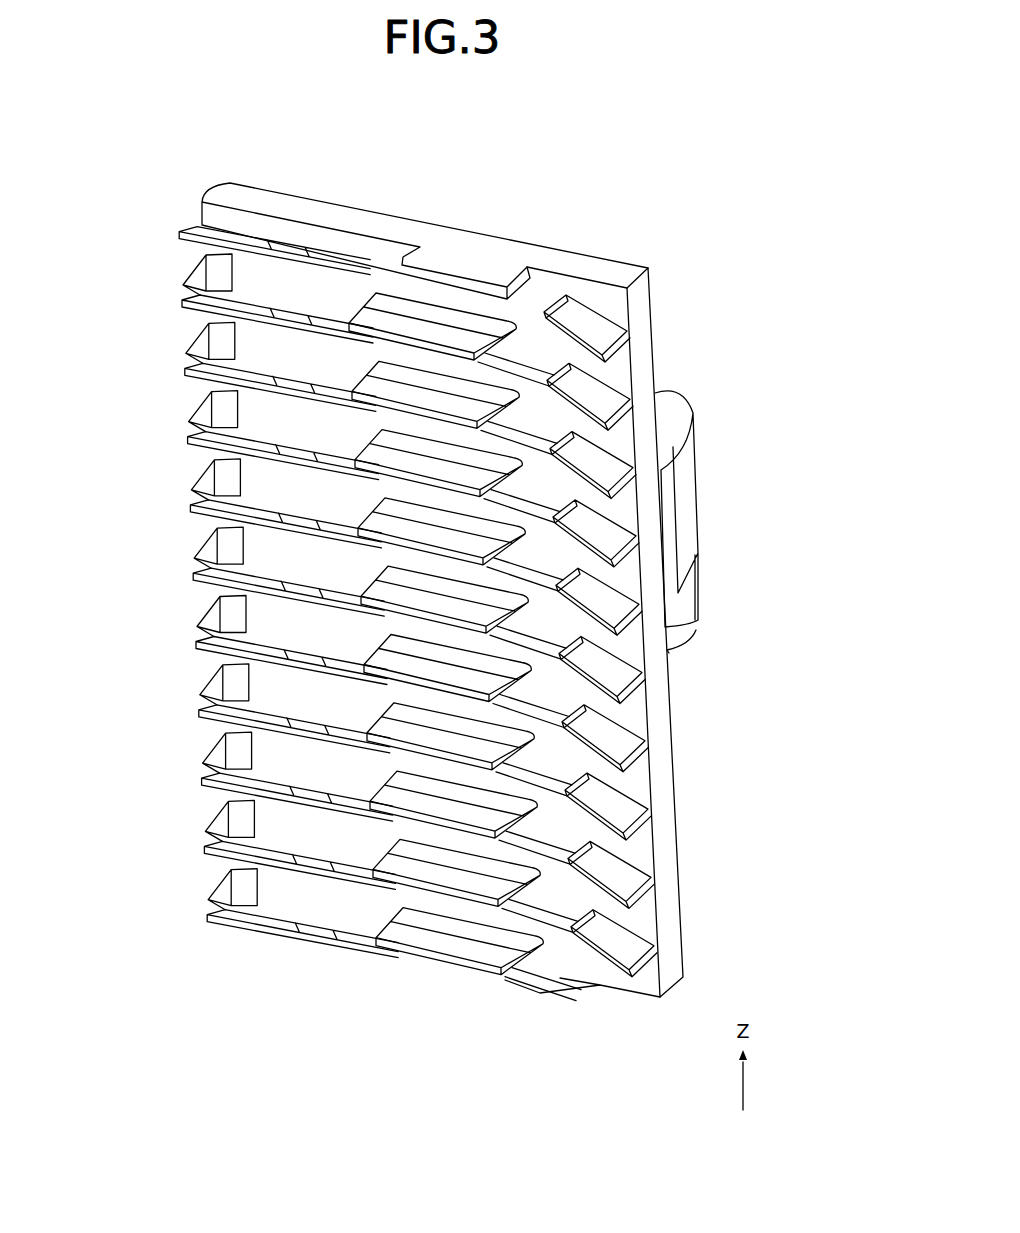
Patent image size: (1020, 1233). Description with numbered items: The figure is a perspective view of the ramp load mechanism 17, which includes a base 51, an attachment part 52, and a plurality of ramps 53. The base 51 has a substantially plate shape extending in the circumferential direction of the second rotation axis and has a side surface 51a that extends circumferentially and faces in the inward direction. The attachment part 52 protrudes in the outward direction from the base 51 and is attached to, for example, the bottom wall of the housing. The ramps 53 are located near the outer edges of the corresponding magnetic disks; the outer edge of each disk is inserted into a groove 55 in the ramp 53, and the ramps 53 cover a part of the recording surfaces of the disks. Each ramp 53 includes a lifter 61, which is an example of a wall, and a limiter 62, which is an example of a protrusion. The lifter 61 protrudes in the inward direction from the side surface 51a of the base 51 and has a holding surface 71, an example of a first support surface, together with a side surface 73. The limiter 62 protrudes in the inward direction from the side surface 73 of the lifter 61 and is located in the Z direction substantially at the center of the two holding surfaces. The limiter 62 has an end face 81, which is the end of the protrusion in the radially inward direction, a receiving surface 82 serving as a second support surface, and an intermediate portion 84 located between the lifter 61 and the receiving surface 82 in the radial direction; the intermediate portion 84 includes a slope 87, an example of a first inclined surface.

The ramp load mechanism 17 is at (436, 583).
The base 51 is at (650, 290).
The side surface 51a is at (613, 300).
The attachment part 52 is at (695, 480).
The ramp 53 is at (617, 383).
The groove 55 is at (186, 330).
The lifter 61 is at (583, 318).
The limiter 62 is at (418, 577).
The holding surface 71 is at (385, 265).
The side surface 73 is at (330, 290).
The end face 81 is at (480, 350).
The receiving surface 82 is at (465, 345).
The intermediate portion 84 is at (440, 330).
The slope 87 is at (440, 330).